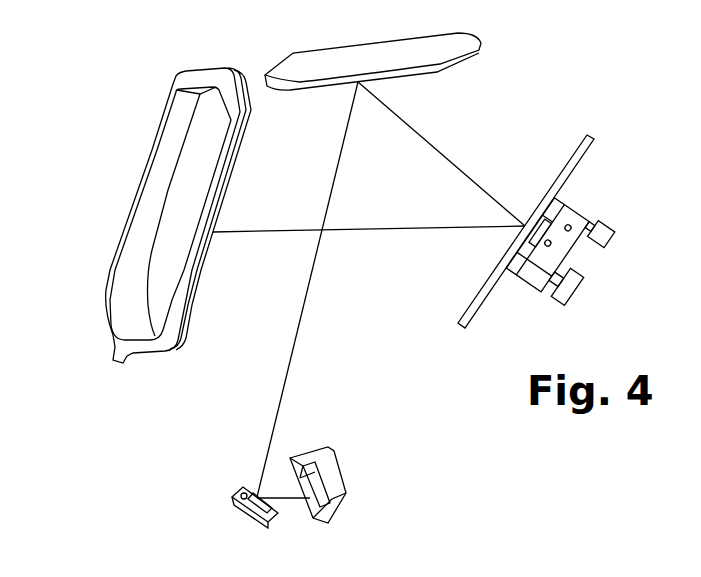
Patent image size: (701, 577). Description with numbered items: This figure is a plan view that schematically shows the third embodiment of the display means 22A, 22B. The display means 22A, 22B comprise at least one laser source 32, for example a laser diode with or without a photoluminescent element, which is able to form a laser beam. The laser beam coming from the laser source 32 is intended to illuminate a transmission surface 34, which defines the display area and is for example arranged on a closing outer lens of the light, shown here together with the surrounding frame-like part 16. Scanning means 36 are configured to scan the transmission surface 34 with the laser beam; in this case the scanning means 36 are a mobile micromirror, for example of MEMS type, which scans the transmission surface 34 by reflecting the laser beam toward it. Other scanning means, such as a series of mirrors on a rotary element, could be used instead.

The frame 16 is at (125, 215).
The display means 22A is at (140, 210).
The display means 22B is at (70, 127).
The transmission surface 34 is at (200, 142).
The laser source 32 is at (323, 488).
The scanning means 36 is at (257, 512).